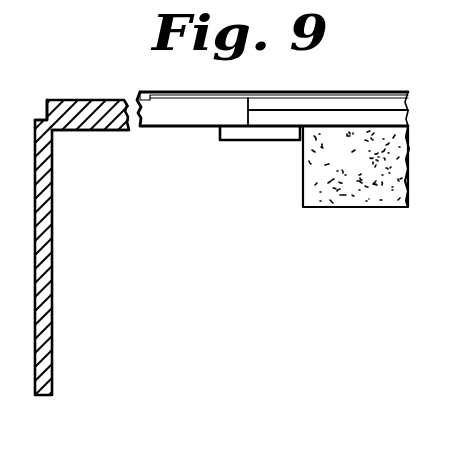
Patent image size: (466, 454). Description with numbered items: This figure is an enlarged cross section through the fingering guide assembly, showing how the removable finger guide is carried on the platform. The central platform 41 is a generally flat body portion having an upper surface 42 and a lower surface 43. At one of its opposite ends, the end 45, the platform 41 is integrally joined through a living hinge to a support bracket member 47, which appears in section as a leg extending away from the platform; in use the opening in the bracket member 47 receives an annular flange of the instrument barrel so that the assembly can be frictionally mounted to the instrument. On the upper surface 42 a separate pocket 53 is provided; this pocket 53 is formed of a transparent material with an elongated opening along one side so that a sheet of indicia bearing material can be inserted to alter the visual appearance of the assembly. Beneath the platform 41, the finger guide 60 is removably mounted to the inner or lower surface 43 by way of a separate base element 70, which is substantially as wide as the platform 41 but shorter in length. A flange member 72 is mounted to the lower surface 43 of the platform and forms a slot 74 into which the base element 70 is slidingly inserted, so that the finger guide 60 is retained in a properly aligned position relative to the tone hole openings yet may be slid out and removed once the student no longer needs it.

The platform 41 is at (192, 113).
The upper surface 42 is at (112, 76).
The lower surface 43 is at (95, 129).
The end 45 is at (42, 118).
The support bracket member 47 is at (53, 265).
The pocket 53 is at (201, 94).
The finger guide 60 is at (349, 206).
The base element 70 is at (300, 98).
The flange member 72 is at (243, 140).
The slot 74 is at (262, 118).